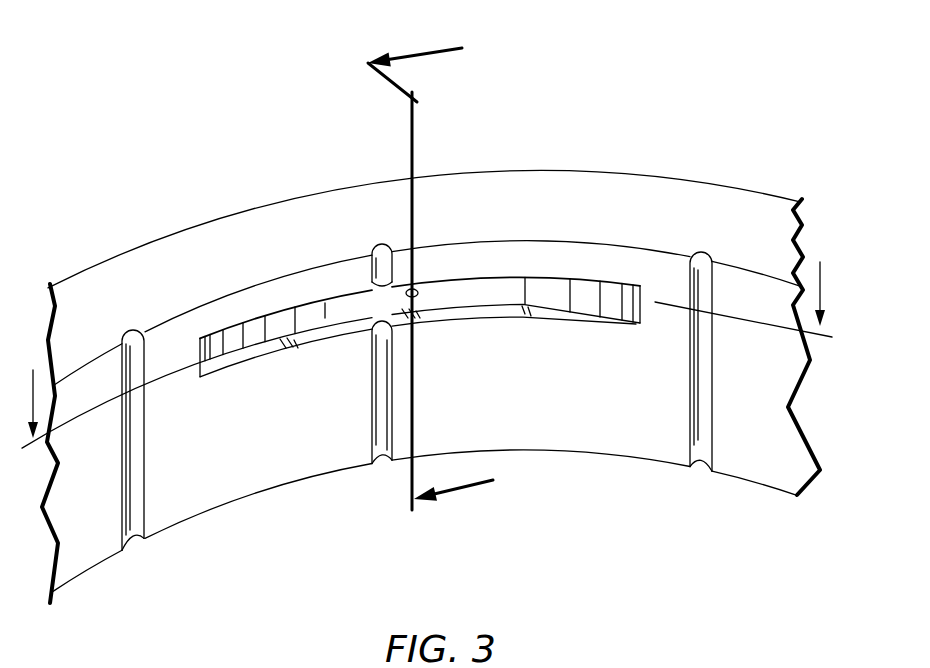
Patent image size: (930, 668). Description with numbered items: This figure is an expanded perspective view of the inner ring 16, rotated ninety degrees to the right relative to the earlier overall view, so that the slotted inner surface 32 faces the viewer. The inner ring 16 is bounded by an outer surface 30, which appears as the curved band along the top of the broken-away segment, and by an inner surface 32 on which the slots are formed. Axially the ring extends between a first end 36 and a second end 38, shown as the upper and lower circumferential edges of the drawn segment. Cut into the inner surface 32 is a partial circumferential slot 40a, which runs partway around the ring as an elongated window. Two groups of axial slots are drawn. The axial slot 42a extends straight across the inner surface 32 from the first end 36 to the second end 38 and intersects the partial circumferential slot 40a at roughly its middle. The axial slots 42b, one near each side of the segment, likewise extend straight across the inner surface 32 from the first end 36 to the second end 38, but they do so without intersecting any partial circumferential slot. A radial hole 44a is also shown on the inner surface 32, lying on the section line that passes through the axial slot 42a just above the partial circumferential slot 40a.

The inner ring 16 is at (178, 93).
The outer surface 30 is at (640, 176).
The inner surface 32 is at (268, 445).
The first end 36 is at (523, 188).
The second end 38 is at (552, 470).
The partial circumferential slot 40a is at (313, 313).
The axial slots 42a is at (370, 405).
The axial slots 42b is at (125, 505).
The radial hole 44a is at (420, 292).